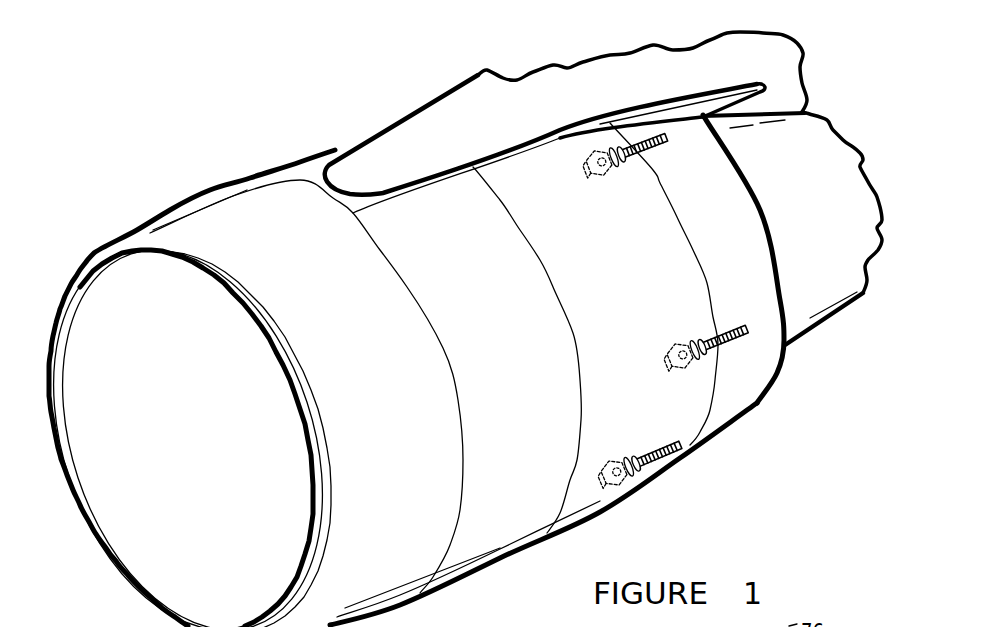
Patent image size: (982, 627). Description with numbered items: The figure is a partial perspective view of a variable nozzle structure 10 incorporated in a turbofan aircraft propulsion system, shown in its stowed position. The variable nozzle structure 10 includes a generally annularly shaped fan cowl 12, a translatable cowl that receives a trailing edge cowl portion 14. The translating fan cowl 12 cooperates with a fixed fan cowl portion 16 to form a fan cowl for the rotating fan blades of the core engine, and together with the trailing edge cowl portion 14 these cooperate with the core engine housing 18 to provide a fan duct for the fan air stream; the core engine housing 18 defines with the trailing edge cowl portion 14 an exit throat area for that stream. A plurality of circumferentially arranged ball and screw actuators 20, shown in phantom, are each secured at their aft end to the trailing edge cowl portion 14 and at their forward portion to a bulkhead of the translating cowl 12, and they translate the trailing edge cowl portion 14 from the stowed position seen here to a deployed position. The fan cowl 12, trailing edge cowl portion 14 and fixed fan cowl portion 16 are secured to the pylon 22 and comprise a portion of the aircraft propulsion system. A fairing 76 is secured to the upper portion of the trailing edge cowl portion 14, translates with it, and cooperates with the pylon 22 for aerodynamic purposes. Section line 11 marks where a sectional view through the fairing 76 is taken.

The variable nozzle structure 10 is at (754, 426).
The section line 11— 11 is at (643, 176).
The fan cowl 12 is at (590, 517).
The trailing edge cowl portion 14 is at (780, 373).
The fixed fan cowl portion 16 is at (483, 571).
The core engine housing 18 is at (837, 317).
The ball and screw actuator 20 is at (597, 178).
The pylon 22 is at (358, 130).
The fairing 76 is at (737, 83).